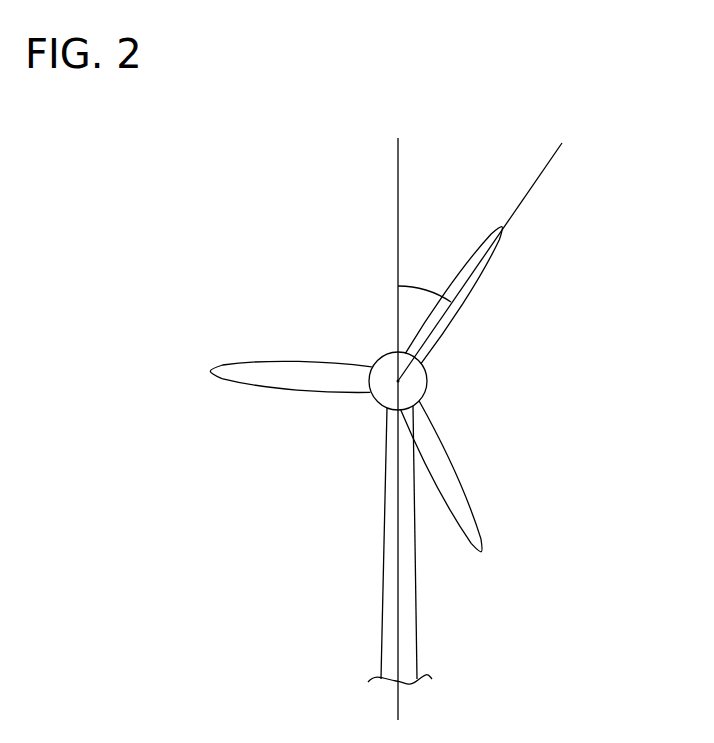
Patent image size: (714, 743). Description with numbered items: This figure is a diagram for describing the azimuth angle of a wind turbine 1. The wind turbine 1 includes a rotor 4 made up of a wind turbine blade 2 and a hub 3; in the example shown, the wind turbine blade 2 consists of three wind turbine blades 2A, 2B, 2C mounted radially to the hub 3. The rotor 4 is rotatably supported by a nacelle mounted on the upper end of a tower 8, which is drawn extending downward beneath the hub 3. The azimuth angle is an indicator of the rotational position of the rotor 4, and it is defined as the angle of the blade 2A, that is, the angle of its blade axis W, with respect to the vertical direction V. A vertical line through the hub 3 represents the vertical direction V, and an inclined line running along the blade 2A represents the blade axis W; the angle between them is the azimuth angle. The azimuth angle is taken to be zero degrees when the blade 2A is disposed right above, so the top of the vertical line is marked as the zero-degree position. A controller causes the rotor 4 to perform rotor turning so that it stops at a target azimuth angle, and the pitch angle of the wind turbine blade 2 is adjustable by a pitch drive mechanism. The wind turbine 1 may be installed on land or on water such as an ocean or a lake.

The wind turbine 1 is at (269, 205).
The wind turbine blade 2 is at (405, 389).
The blade 2A is at (495, 262).
The blade 2B is at (465, 497).
The blade 2C is at (264, 362).
The hub 3 is at (428, 388).
The rotor 4 is at (349, 416).
The tower 8 is at (380, 616).
The vertical direction V is at (397, 173).
The blade axis W is at (543, 170).